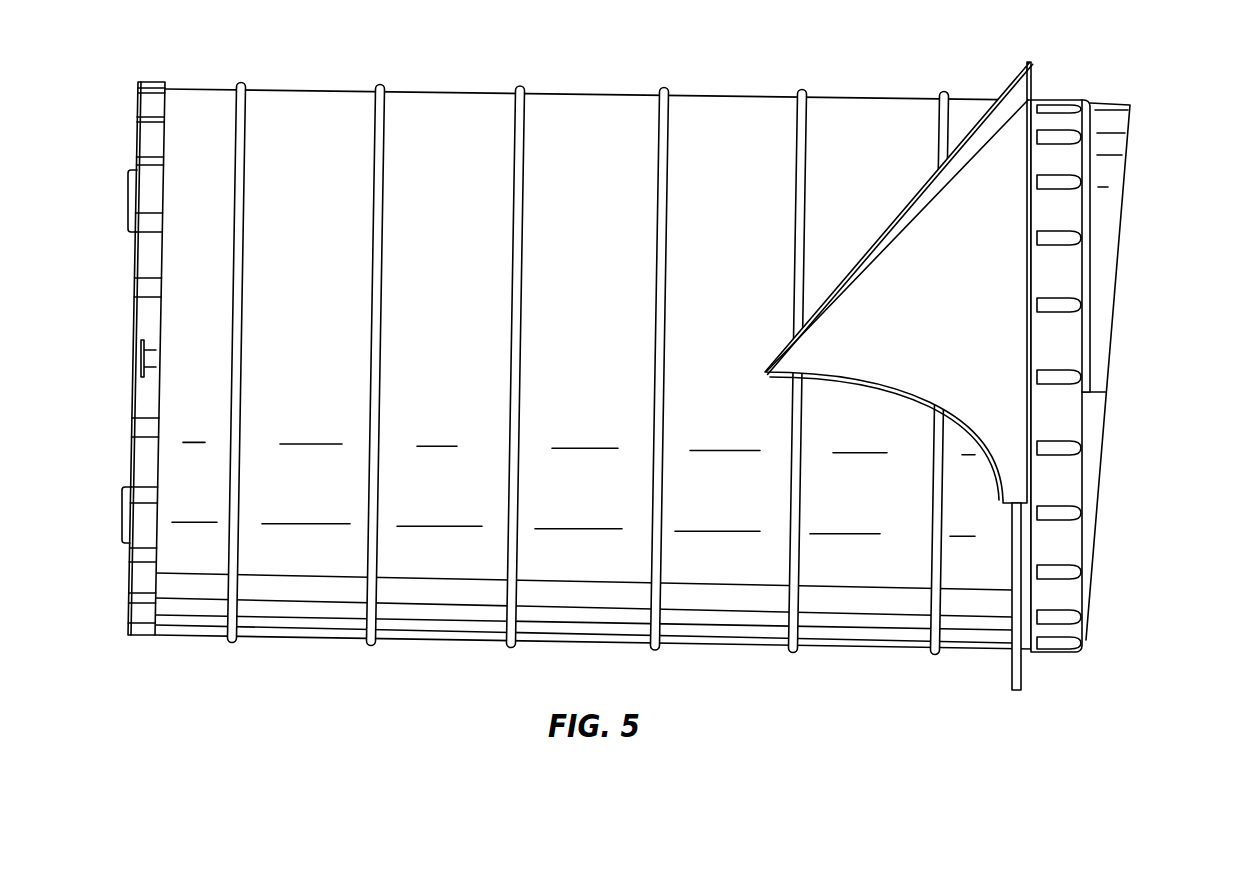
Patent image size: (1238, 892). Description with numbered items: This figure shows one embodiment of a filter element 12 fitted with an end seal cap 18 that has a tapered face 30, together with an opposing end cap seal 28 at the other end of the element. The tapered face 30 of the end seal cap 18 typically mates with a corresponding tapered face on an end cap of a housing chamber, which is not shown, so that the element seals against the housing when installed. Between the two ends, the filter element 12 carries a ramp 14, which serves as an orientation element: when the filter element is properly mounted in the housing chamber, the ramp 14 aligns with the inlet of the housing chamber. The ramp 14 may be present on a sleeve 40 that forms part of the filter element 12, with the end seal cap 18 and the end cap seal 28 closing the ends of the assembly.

The filter element 12 is at (458, 115).
The ramp 14 is at (945, 250).
The end seal cap 18 is at (1058, 650).
The end cap seal 28 is at (152, 105).
The tapered face 30 is at (1107, 223).
The sleeve 40 is at (1012, 672).